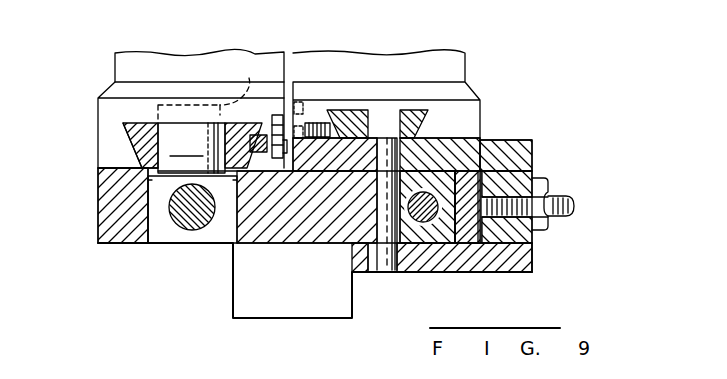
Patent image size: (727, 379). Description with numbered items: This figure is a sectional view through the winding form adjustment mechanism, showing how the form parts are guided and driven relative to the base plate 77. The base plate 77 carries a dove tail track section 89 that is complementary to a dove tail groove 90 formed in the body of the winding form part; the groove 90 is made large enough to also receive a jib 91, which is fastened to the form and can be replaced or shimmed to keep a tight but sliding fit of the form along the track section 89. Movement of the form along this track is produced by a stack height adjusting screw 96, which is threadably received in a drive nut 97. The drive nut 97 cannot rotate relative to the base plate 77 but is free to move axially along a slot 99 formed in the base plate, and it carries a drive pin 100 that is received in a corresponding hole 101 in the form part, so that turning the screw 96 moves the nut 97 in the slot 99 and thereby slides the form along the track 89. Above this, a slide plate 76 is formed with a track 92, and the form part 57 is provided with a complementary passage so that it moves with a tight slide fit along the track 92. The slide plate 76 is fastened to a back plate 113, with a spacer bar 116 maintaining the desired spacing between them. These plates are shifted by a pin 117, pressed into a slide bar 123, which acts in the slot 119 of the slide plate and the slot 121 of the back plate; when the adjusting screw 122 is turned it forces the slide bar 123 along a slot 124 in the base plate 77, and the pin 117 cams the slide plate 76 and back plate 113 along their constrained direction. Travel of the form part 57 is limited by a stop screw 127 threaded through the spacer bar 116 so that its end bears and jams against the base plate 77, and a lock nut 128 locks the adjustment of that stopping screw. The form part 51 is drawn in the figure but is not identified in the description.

The first clamp block 51 is at (186, 59).
The form part 57 is at (416, 65).
The slide plate 76 is at (513, 145).
The base plate 77 is at (277, 230).
The dove tail track section 89 is at (137, 150).
The dove tail groove 90 is at (147, 123).
The jib 91 is at (265, 130).
The track 92 is at (423, 123).
The stack height adjusting screw 96 is at (197, 223).
The drive nut 97 is at (162, 233).
The slot 99 is at (123, 242).
The drive pin 100 is at (191, 148).
The hole 101 is at (249, 78).
The back plate 113 is at (530, 272).
The spacer bar 116 is at (530, 256).
The pin 117 is at (388, 272).
The slot 119 is at (393, 118).
The slot 121 is at (372, 262).
The adjusting screw 122 is at (426, 200).
The slide bar 123 is at (418, 233).
The slot 124 is at (325, 243).
The screw 127 is at (574, 203).
The lock nut 128 is at (537, 182).